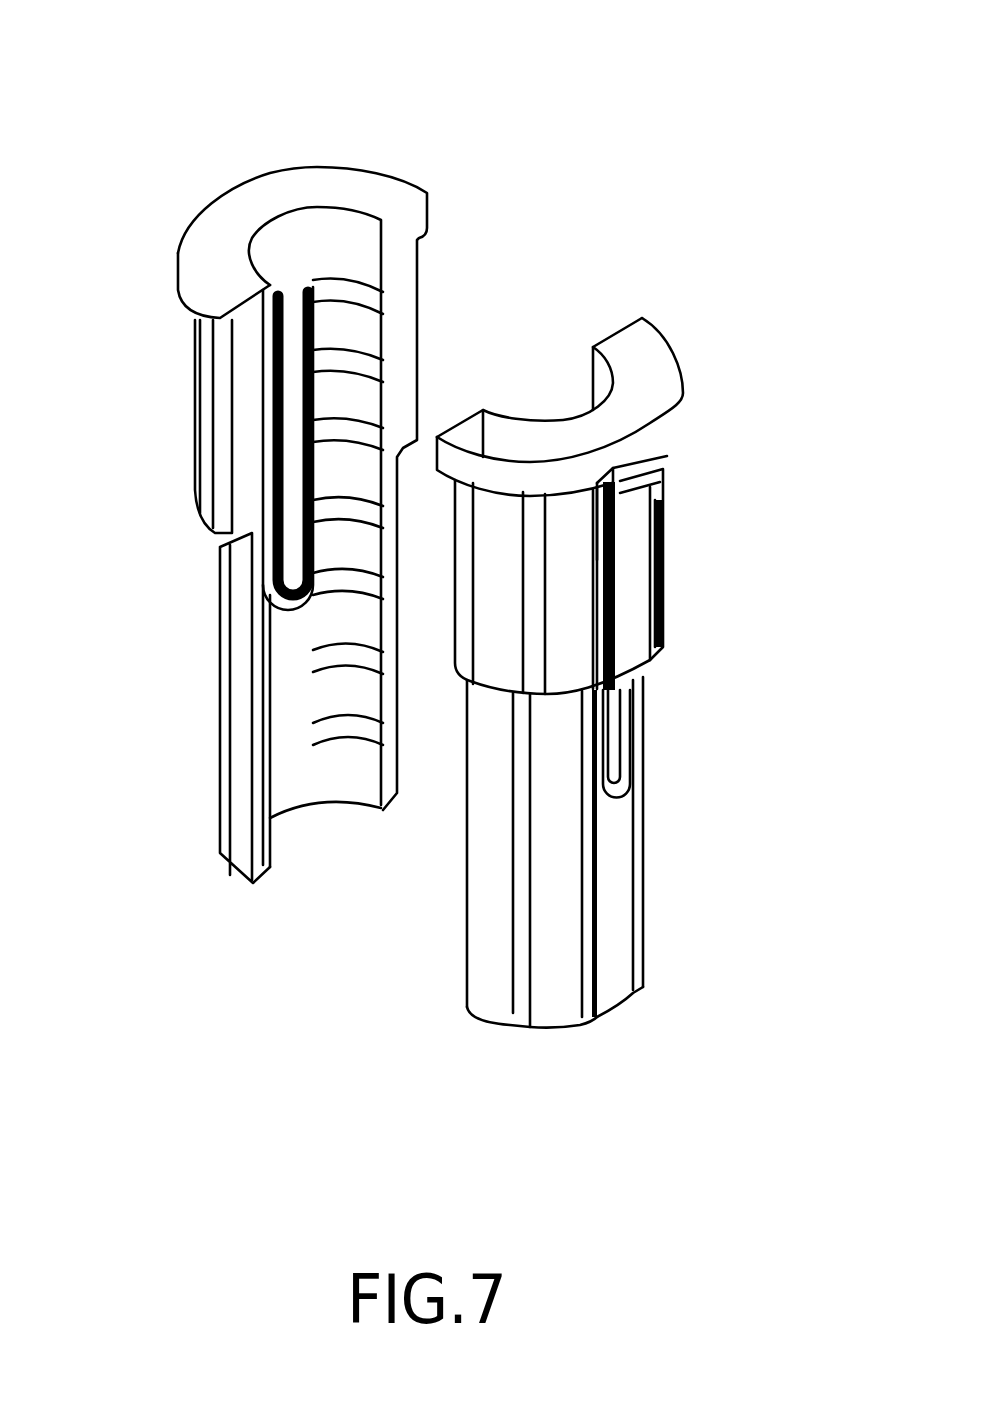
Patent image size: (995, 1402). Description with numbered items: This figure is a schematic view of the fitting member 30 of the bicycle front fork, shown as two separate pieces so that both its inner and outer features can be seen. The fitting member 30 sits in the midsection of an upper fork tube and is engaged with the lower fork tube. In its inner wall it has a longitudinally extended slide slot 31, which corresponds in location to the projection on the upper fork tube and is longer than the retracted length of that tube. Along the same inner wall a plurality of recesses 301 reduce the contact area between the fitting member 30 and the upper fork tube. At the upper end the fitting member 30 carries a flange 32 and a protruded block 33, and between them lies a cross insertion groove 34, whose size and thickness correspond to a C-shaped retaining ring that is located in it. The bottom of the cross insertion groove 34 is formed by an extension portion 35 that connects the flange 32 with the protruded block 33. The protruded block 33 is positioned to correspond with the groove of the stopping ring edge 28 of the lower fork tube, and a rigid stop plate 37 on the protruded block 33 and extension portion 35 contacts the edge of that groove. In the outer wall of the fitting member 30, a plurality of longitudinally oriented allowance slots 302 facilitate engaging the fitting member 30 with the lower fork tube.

The stopping ring edge 28 is at (577, 803).
The fitting member 30 is at (242, 697).
The slide slot 31 is at (287, 283).
The flange 32 is at (498, 472).
The protruded block 33 is at (667, 517).
The cross insertion groove 34 is at (663, 467).
The extension portion 35 is at (618, 487).
The rigid stop plate 37 is at (613, 530).
The recesses 301 is at (318, 737).
The allowance slots 302 is at (525, 987).